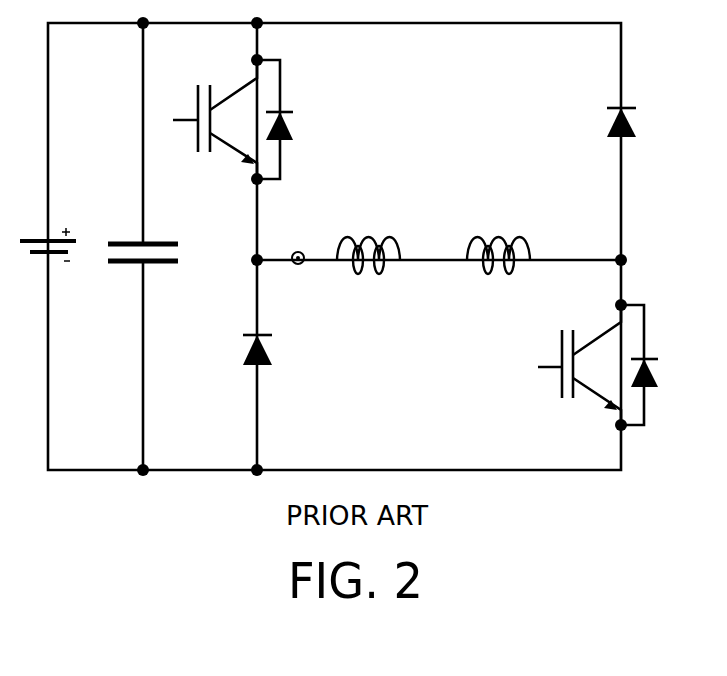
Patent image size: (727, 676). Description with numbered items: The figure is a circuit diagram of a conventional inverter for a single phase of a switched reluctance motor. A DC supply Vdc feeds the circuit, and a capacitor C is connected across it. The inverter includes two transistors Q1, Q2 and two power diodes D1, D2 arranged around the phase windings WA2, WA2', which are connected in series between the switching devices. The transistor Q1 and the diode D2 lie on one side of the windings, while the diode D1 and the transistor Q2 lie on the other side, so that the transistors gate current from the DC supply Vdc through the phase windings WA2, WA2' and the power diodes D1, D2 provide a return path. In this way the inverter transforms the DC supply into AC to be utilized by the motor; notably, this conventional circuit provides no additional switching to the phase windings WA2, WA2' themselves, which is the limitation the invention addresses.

The DC supply Vdc is at (61, 280).
The capacitor C is at (143, 231).
The transistor Q1 is at (233, 114).
The transistor Q2 is at (598, 379).
The power diode D1 is at (230, 377).
The power diode D2 is at (640, 128).
The phase winding WA2 is at (368, 283).
The phase winding WA2' is at (498, 284).